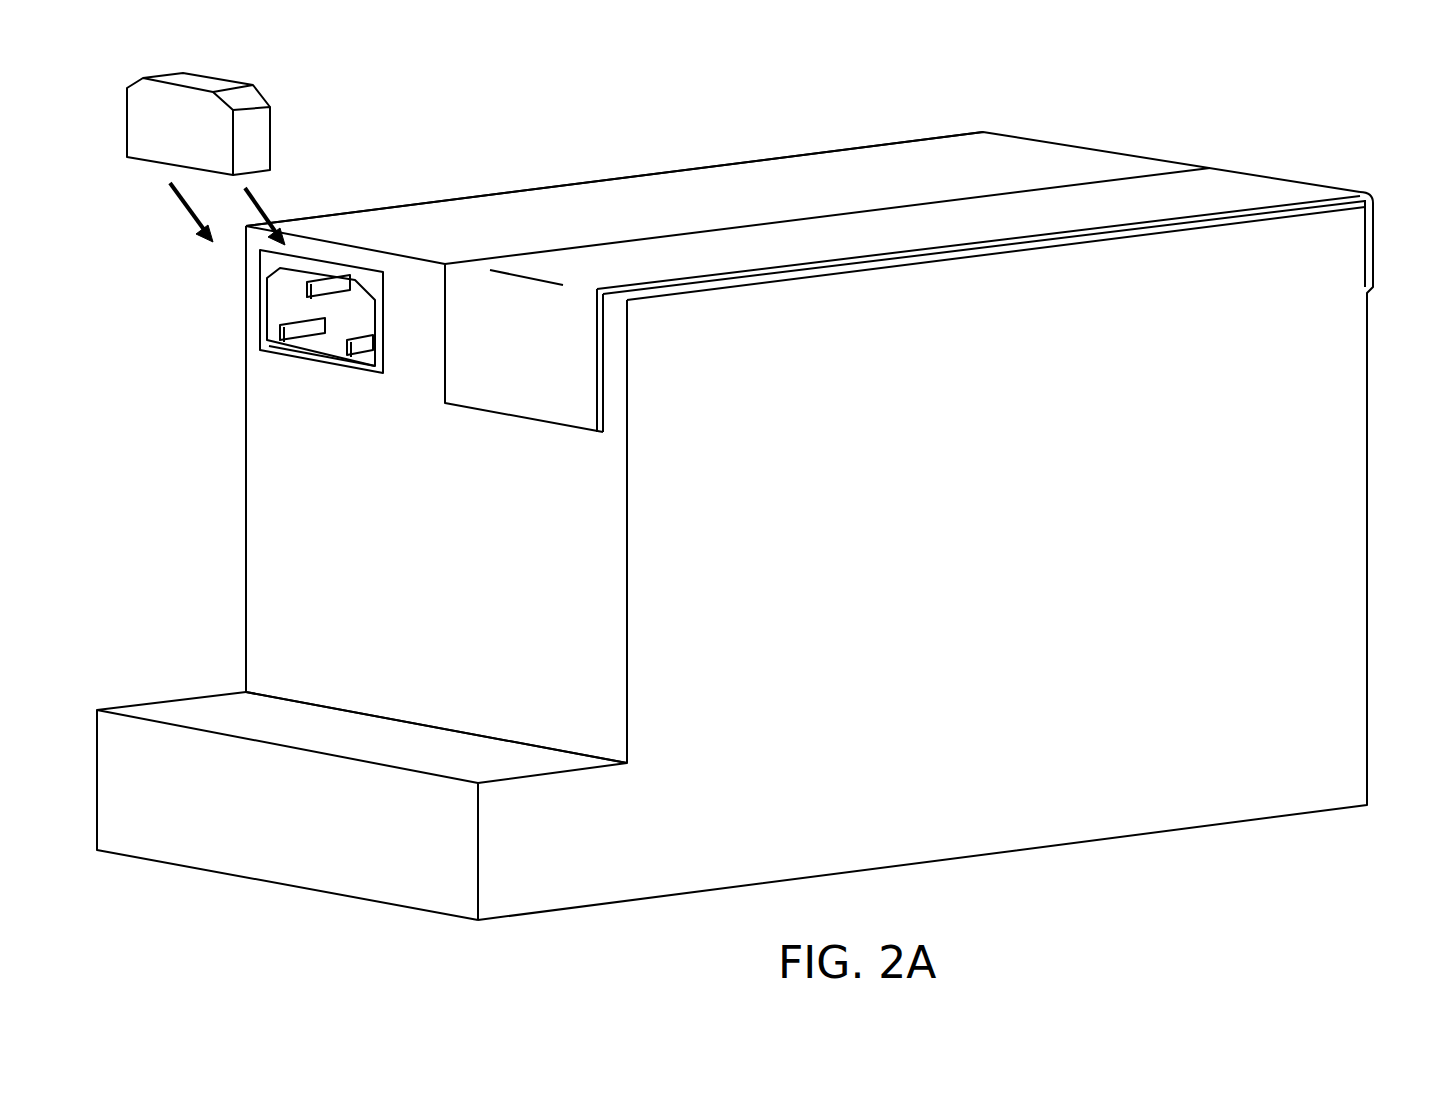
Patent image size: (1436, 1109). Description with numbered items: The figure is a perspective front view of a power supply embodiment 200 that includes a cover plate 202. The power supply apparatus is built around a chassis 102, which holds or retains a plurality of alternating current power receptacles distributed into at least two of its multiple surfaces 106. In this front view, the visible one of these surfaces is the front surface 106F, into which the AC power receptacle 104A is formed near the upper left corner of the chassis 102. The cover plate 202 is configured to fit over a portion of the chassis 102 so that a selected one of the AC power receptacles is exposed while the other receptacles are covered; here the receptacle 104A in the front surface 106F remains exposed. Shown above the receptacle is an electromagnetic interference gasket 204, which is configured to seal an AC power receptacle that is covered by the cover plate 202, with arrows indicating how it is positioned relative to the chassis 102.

The chassis 102 is at (247, 467).
The AC power receptacle 104A is at (327, 343).
The chassis surfaces 106 is at (1048, 158).
The front surface 106F is at (315, 546).
The power supply embodiment 200 is at (172, 328).
The cover plate 202 is at (1247, 178).
The EMI gasket 204 is at (262, 135).